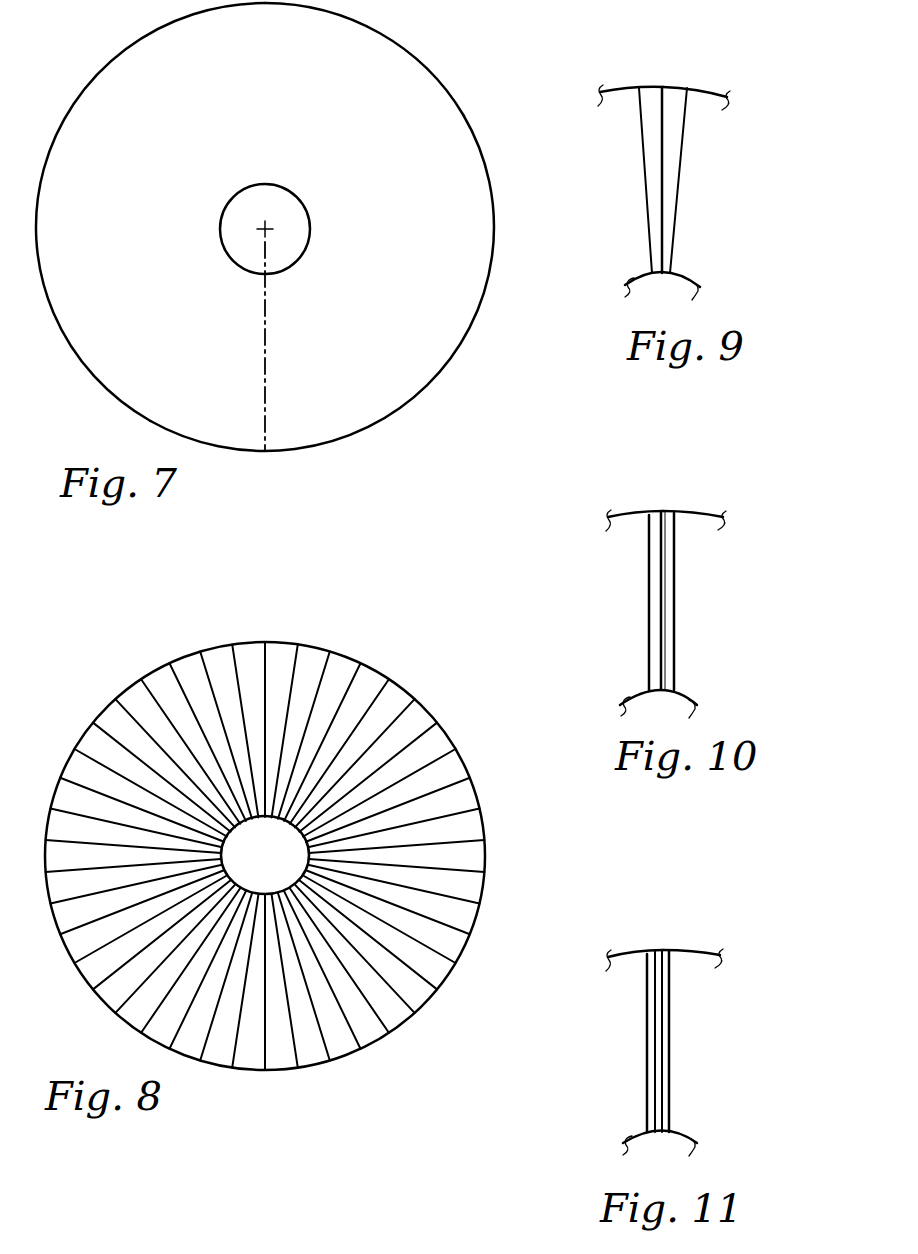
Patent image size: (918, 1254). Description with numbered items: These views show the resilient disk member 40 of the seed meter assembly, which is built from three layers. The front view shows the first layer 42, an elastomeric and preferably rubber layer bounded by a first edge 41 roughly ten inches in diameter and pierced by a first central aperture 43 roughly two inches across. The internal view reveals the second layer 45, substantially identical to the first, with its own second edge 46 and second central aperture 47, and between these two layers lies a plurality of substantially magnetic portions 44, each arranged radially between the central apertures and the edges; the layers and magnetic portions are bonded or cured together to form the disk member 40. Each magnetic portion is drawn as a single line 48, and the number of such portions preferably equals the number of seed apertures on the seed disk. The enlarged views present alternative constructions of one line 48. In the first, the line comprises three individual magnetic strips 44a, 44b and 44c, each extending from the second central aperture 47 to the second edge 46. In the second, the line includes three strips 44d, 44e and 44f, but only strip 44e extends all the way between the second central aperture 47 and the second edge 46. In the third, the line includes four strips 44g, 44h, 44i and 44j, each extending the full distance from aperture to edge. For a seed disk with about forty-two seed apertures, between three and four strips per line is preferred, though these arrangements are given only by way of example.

In FIG. 7, the resilient disk member 40 is at (412, 403).
In FIG. 8, the resilient disk member 40 is at (397, 1022).
In FIG. 7, the first edge 41 is at (355, 433).
In FIG. 9, the first edge 41 is at (713, 90).
In FIG. 10, the first edge 41 is at (713, 517).
In FIG. 11, the first edge 41 is at (705, 953).
In FIG. 7, the first layer 42 is at (428, 74).
In FIG. 7, the first central aperture 43 is at (300, 202).
In FIG. 8, the plurality of substantially magnetic portions 44 is at (463, 812).
In FIG. 9, the magnetic strip 44a is at (645, 193).
In FIG. 9, the magnetic strip 44b is at (670, 84).
In FIG. 9, the magnetic strip 44c is at (678, 182).
In FIG. 10, the magnetic strip 44d is at (648, 598).
In FIG. 10, the magnetic strip 44e is at (668, 510).
In FIG. 10, the magnetic strip 44f is at (677, 587).
In FIG. 11, the magnetic strip 44g is at (648, 1045).
In FIG. 11, the magnetic strip 44h is at (660, 950).
In FIG. 11, the magnetic strip 44i is at (665, 1100).
In FIG. 11, the magnetic strip 44j is at (672, 1025).
In FIG. 8, the second layer 45 is at (338, 662).
In FIG. 8, the second edge 46 is at (489, 889).
In FIG. 9, the second edge 46 is at (613, 87).
In FIG. 10, the second edge 46 is at (620, 513).
In FIG. 11, the second edge 46 is at (615, 953).
In FIG. 8, the second central aperture 47 is at (230, 873).
In FIG. 9, the second central aperture 47 is at (627, 287).
In FIG. 10, the second central aperture 47 is at (630, 697).
In FIG. 11, the second central aperture 47 is at (627, 1137).
In FIG. 8, the single line 48 is at (262, 650).
In FIG. 9, the single line 48 is at (660, 145).